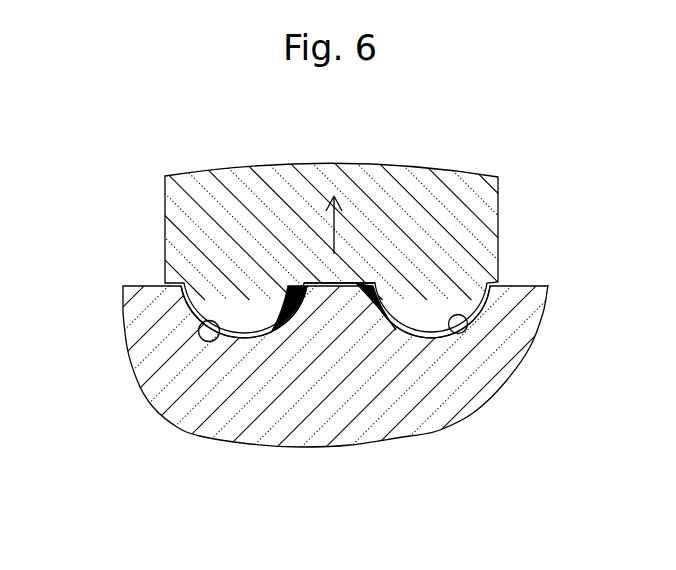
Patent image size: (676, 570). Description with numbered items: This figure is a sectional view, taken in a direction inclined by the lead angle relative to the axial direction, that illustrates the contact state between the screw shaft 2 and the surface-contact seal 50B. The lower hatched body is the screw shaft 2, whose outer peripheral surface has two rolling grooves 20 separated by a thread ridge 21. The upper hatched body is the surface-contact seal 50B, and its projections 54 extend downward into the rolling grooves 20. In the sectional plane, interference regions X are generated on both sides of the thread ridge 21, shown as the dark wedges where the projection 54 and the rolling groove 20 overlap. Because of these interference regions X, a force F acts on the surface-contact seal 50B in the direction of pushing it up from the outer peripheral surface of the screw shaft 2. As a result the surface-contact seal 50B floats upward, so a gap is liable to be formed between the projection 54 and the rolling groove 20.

The screw shaft 2 is at (517, 341).
The rolling groove 20 is at (219, 341).
The thread ridge 21 is at (320, 300).
The surface-contact seal 50B is at (498, 200).
The projection 54 is at (253, 318).
The interference region X is at (362, 320).
The force F is at (349, 225).